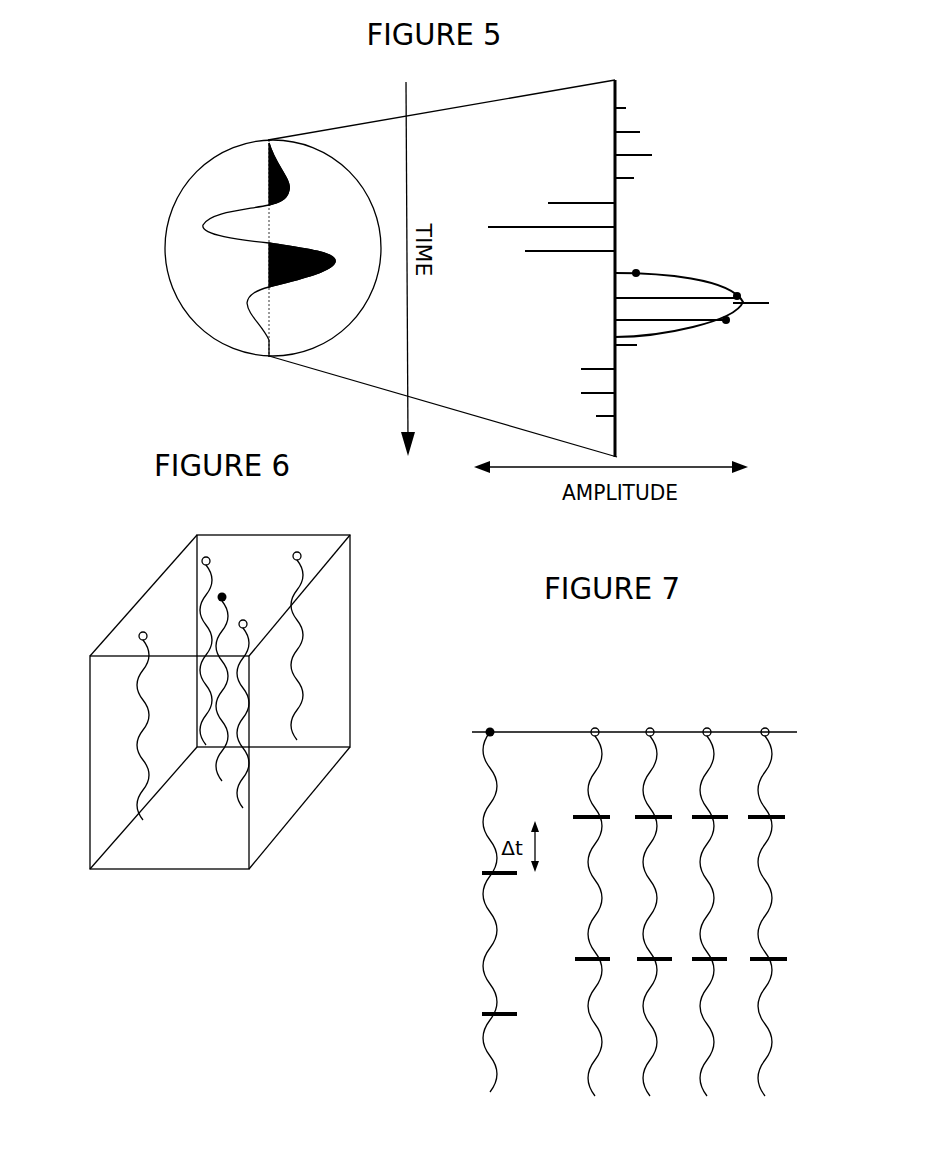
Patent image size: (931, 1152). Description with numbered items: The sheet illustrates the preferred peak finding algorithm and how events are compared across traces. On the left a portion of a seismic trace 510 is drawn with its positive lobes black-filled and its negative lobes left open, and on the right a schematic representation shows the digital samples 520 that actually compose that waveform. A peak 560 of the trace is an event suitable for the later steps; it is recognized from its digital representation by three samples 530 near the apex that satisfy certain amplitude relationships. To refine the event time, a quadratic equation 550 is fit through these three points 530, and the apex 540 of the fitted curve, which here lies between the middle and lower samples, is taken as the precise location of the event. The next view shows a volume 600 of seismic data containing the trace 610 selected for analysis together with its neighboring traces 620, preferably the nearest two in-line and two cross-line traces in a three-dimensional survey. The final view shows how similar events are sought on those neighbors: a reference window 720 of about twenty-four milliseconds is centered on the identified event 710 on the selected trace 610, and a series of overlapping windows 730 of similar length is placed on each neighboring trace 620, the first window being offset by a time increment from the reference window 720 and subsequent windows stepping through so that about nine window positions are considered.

In FIG. 5, the seismic trace 510 is at (189, 164).
In FIG. 5, the digital samples 520 is at (622, 103).
In FIG. 5, the peak-defining digital samples 530 is at (726, 312).
In FIG. 5, the apex 540 is at (750, 296).
In FIG. 5, the quadratic equation 550 is at (655, 338).
In FIG. 5, the peak 560 is at (333, 262).
In FIG. 6, the seismic data volume 600 is at (376, 623).
In FIG. 6, the selected trace 610 is at (222, 590).
In FIG. 7, the selected trace 610 is at (490, 725).
In FIG. 6, the neighboring traces 620 is at (200, 550).
In FIG. 7, the neighboring traces 620 is at (595, 725).
In FIG. 7, the identified event 710 is at (506, 942).
In FIG. 7, the reference window 720 is at (483, 1005).
In FIG. 7, the overlapping windows 730 is at (787, 958).